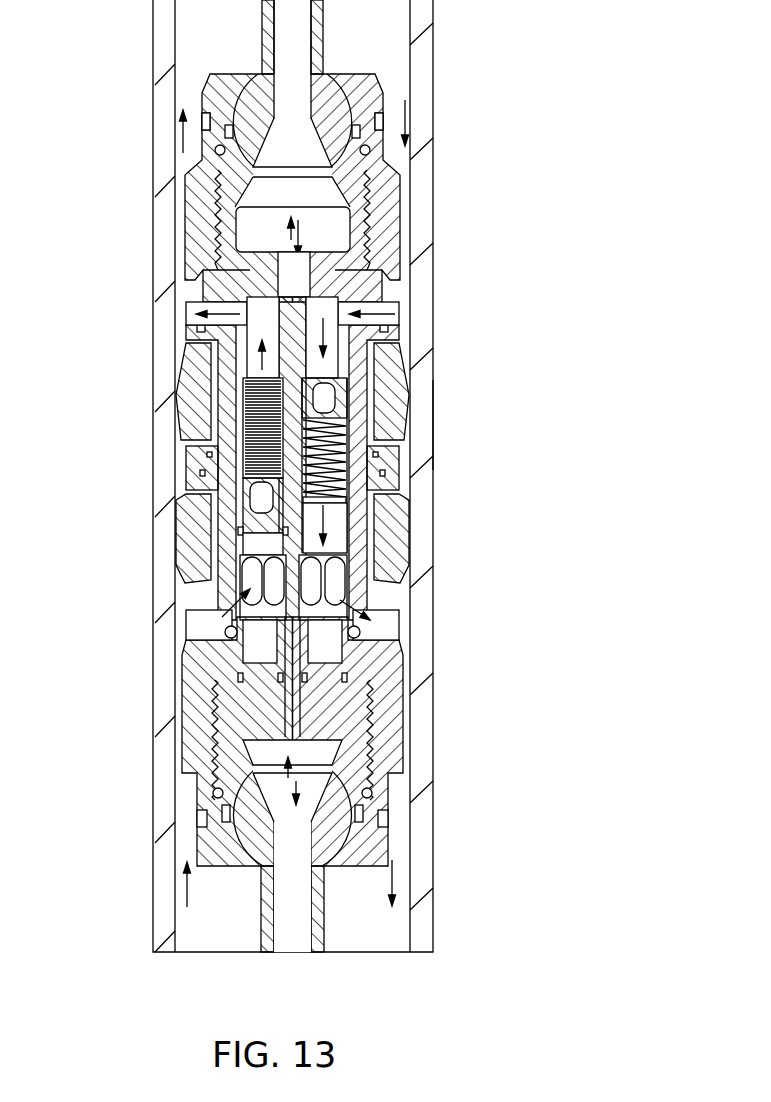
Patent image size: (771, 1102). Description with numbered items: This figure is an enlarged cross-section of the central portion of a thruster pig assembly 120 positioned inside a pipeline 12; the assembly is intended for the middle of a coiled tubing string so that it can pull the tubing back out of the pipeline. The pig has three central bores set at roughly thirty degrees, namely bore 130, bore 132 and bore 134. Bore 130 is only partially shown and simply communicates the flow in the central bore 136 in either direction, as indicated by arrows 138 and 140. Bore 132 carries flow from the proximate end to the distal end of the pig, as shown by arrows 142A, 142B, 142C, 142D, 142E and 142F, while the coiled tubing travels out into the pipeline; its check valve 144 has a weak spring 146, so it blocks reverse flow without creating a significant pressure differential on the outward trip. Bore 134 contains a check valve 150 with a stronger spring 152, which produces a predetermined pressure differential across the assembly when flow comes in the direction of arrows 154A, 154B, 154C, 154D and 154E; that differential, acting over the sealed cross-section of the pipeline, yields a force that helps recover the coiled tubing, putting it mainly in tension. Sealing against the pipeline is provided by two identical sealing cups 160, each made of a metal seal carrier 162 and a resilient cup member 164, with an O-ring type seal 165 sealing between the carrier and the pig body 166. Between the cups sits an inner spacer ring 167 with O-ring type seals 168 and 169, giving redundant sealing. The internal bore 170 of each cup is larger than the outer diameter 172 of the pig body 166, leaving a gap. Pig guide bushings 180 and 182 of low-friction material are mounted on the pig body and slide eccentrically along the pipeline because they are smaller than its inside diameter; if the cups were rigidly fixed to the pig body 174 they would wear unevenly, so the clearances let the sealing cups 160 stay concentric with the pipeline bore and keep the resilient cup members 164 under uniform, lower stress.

The pipeline 12 is at (433, 156).
The thruster pig assembly 120 is at (456, 424).
The bore 130 is at (297, 270).
The bore 132 is at (330, 297).
The bore 134 is at (310, 280).
The central bore 136 is at (305, 53).
The arrow 138 is at (297, 228).
The arrow 140 is at (297, 787).
The arrow 142A is at (408, 118).
The arrow 142B is at (352, 315).
The arrow 142C is at (332, 348).
The arrow 142D is at (335, 520).
The arrow 142E is at (372, 617).
The arrow 142F is at (396, 893).
The check valve 144 is at (347, 398).
The weak spring 146 is at (330, 490).
The check valve 150 is at (205, 500).
The stronger spring 152 is at (245, 433).
The arrow 154A is at (182, 896).
The arrow 154B is at (220, 615).
The arrow 154C is at (255, 367).
The arrow 154D is at (193, 320).
The arrow 154E is at (180, 137).
The sealing cup 160 is at (402, 500).
The metal seal carrier 162 is at (375, 562).
The resilient cup member 164 is at (350, 545).
The O-ring type seal 165 is at (218, 330).
The pig body 166 is at (250, 268).
The inner spacer ring 167 is at (350, 462).
The O-ring type seal 168 is at (205, 455).
The O-ring type seal 169 is at (205, 478).
The internal bore 170 is at (215, 540).
The outer diameter 172 is at (245, 565).
The pig body 174 is at (245, 585).
The pig guide bushing 180 is at (395, 198).
The pig guide bushing 182 is at (398, 735).